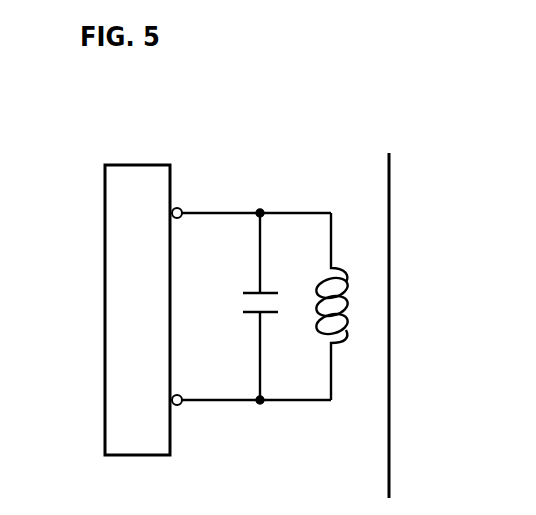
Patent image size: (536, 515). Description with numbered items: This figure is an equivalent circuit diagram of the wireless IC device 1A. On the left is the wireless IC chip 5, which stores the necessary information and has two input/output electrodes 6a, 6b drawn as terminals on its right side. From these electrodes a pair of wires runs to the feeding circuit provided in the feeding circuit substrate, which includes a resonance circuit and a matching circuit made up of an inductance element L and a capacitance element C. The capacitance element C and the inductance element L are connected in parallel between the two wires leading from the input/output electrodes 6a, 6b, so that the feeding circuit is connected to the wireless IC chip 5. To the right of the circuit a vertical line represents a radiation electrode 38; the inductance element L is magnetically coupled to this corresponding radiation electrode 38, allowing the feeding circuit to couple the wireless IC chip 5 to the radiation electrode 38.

The wireless IC device 1A is at (291, 107).
The wireless IC chip 5 is at (130, 165).
The input/output electrode 6a is at (180, 208).
The input/output electrode 6b is at (180, 405).
The capacitance element C is at (245, 306).
The inductance element L is at (343, 306).
The radiation electrode 38 is at (388, 453).